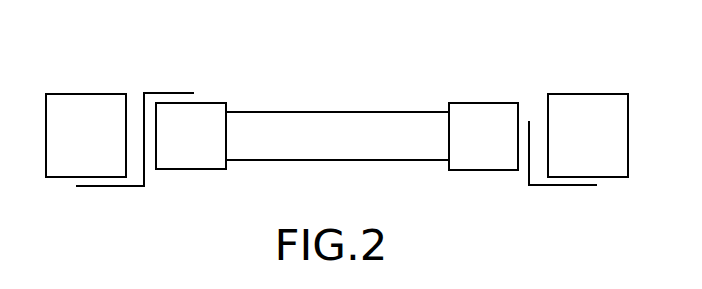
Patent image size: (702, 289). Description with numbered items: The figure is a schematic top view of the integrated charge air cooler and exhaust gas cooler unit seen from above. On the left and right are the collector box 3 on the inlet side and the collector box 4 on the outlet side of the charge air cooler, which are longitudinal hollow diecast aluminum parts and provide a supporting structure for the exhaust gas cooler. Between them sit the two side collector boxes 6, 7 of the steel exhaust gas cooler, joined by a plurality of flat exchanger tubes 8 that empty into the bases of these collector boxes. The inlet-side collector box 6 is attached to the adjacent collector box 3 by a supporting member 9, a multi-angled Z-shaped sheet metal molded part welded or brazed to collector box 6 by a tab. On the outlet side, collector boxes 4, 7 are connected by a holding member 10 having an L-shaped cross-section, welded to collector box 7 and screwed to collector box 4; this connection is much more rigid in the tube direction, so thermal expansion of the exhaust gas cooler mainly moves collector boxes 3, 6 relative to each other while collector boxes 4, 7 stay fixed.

The collector box 3 is at (68, 102).
The collector box 4 is at (590, 99).
The collector box 6 is at (203, 117).
The collector box 7 is at (483, 108).
The flat exchanger tubes 8 is at (297, 120).
The supporting member 9 is at (125, 187).
The holding member 10 is at (548, 186).